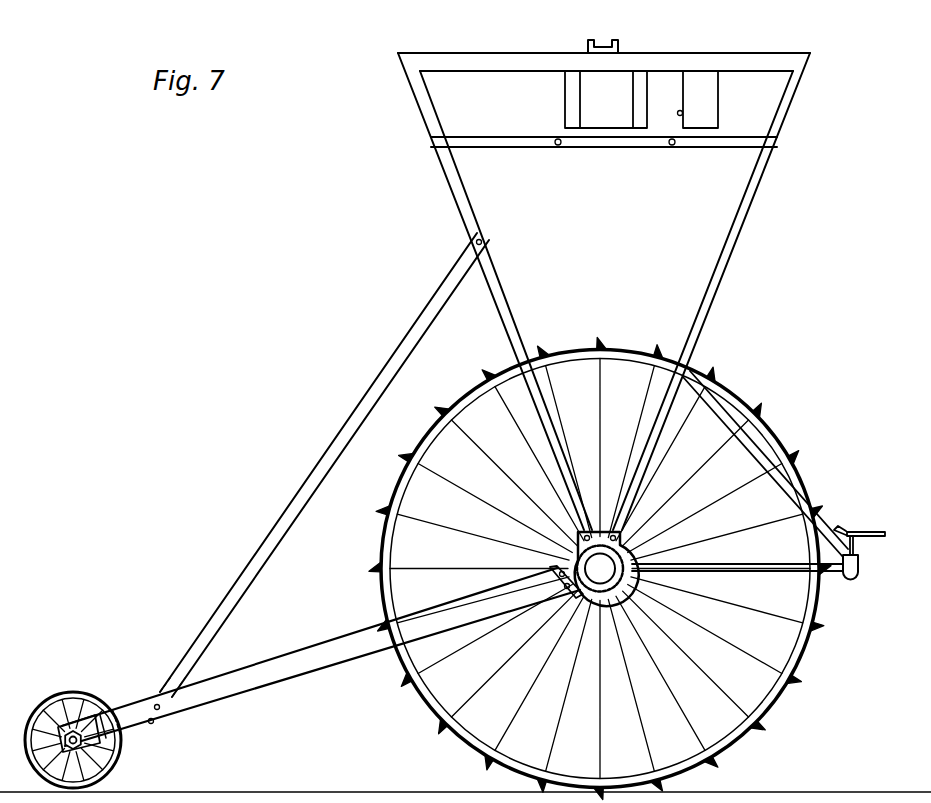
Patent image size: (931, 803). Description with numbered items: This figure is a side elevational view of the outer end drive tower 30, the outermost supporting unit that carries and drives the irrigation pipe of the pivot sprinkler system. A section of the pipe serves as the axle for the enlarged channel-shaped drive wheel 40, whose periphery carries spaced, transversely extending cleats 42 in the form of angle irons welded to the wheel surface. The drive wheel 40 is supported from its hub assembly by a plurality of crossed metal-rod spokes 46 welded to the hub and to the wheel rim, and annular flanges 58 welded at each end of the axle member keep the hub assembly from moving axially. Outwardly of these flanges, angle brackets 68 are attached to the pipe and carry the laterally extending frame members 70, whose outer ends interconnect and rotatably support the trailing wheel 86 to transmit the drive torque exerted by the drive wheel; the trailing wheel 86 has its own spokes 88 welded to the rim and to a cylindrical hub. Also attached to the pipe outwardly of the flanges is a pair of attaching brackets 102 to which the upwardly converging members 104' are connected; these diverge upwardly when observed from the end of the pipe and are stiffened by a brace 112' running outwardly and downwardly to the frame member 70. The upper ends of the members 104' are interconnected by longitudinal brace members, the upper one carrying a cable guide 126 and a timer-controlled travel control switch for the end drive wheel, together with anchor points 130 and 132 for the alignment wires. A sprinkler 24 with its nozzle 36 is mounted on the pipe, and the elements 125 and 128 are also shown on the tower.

The sprinkler 24 is at (832, 572).
The outer end drive tower 30 is at (738, 265).
The nozzle 36 is at (858, 534).
The drive wheel 40 is at (432, 706).
The cleats 42 is at (752, 726).
The spokes 46 is at (772, 663).
The annular flanges 58 is at (590, 600).
The angle brackets 68 is at (560, 563).
The frame members 70 is at (290, 670).
The trailing wheel 86 is at (62, 692).
The spokes 88 is at (85, 707).
The attaching brackets 102 is at (656, 502).
The upwardly converging members 104' is at (711, 291).
The brace 112' is at (319, 478).
The hopper 125 is at (736, 60).
The cable guide 126 is at (609, 40).
The seed box 128 is at (587, 90).
The anchor point 130 is at (673, 148).
The anchor point 132 is at (557, 148).